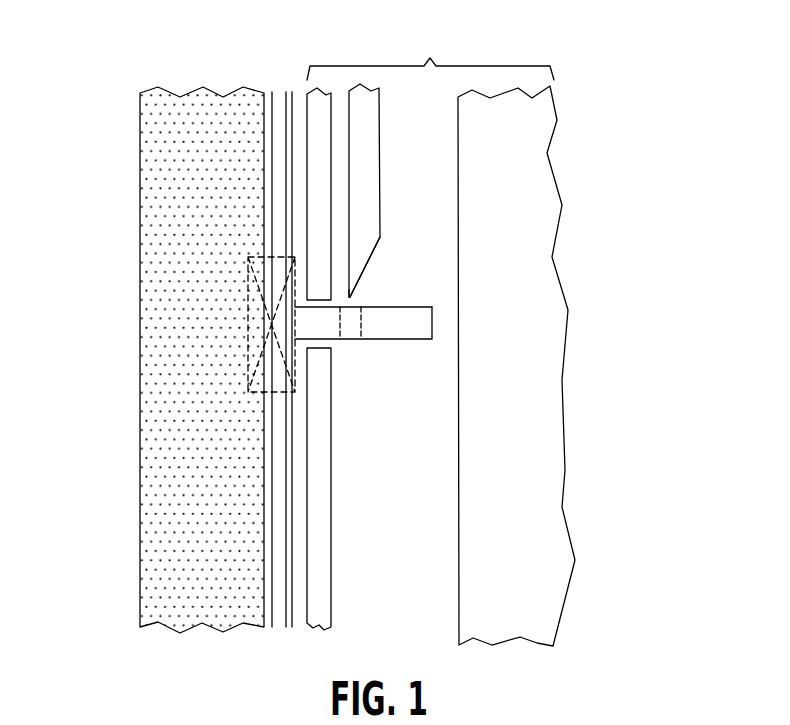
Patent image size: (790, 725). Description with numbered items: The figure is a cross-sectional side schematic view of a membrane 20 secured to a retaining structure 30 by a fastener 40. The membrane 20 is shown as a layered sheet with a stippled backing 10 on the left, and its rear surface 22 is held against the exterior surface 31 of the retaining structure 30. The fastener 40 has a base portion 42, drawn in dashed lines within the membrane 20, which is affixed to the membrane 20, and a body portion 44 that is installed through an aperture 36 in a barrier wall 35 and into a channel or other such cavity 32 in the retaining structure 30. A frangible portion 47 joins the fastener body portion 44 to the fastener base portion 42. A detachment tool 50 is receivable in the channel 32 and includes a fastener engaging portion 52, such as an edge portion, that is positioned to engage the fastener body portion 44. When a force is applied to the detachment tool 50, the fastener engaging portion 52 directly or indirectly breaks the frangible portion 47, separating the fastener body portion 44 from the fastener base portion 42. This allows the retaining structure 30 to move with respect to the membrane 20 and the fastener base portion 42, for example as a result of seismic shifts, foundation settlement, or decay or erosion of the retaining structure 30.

The substrate 10 is at (172, 527).
The membrane 20 is at (410, 352).
The rear surface 22 is at (285, 588).
The retaining structure 30 is at (430, 58).
The exterior surface 31 is at (292, 562).
The channel 32 is at (395, 487).
The barrier wall 35 is at (318, 148).
The aperture 36 is at (323, 302).
The fastener 40 is at (367, 334).
The base portion 42 is at (247, 321).
The body portion 44 is at (400, 307).
The frangible portion 47 is at (350, 327).
The detachment tool 50 is at (362, 140).
The fastener engaging portion 52 is at (355, 283).